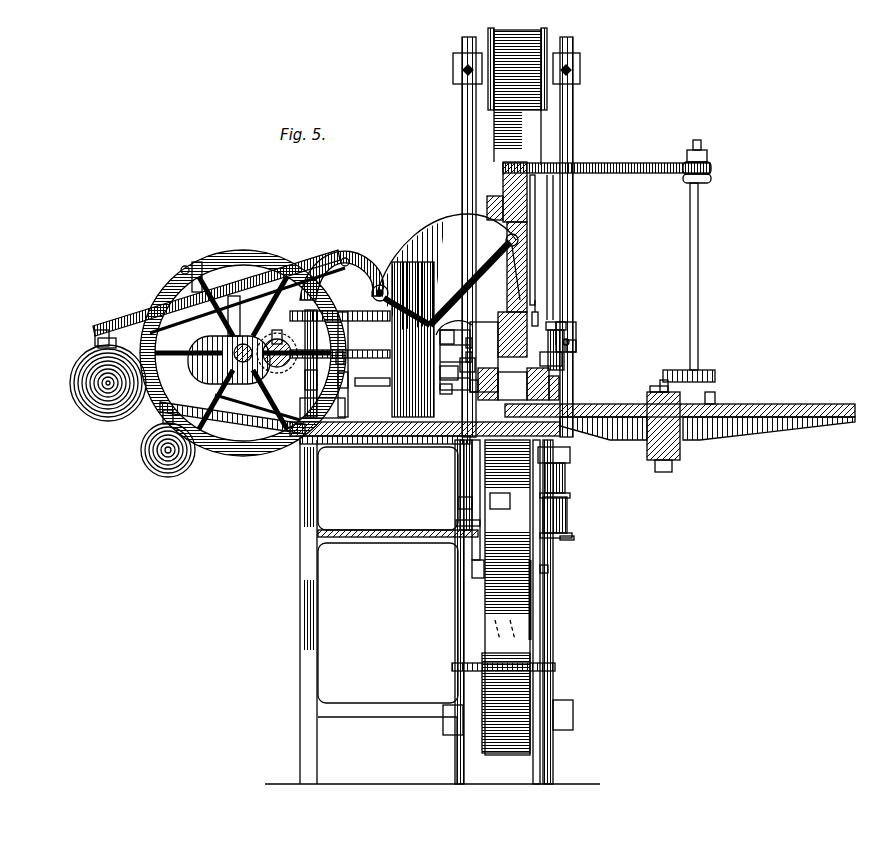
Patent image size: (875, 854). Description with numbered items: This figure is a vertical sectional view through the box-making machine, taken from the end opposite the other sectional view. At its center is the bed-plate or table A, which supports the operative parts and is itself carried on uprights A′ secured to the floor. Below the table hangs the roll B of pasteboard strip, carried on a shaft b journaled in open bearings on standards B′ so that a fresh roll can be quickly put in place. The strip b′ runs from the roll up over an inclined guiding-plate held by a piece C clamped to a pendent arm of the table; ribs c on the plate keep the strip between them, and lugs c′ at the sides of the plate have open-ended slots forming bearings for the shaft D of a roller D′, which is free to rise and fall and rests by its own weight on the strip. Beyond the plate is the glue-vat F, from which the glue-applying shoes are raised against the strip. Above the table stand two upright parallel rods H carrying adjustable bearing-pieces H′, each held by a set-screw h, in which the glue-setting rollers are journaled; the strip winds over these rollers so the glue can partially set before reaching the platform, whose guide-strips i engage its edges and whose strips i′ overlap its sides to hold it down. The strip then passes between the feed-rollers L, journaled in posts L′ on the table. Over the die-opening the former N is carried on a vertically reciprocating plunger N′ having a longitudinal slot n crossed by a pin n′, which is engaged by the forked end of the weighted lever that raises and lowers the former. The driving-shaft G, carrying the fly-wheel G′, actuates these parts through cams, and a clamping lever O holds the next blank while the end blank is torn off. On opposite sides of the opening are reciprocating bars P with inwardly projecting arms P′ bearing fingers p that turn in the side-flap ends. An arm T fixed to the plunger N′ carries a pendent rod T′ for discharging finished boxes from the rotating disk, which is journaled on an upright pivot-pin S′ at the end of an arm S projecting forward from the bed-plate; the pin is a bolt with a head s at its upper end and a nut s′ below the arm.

The upright parallel rods H is at (465, 186).
The bearing-pieces H′ is at (460, 80).
The set-screw h is at (458, 68).
The arm T is at (622, 166).
The plunger N′ is at (527, 190).
The longitudinal slot n is at (535, 220).
The pendent rod T′ is at (700, 255).
The head s is at (665, 379).
The pivot-pin S′ is at (660, 388).
The arm S is at (603, 441).
The nut s′ is at (673, 466).
The bed-plate A is at (378, 442).
The horizontally-reciprocating bars P is at (577, 368).
The posts L′ is at (559, 382).
The clamping lever O is at (413, 339).
The pin n′ is at (509, 264).
The fly-wheel G′ is at (178, 282).
The driving-shaft G is at (210, 343).
The fingers p is at (338, 357).
The guide-strips i′ is at (468, 343).
The guide-strips i is at (468, 356).
The former N is at (440, 340).
The arms P′ is at (446, 396).
The feed-rollers L is at (470, 387).
The uprights A′ is at (312, 620).
The roll B is at (500, 664).
The standards B′ is at (456, 757).
The shaft b is at (455, 665).
The strip b′ is at (533, 597).
The roller D′ is at (507, 509).
The shaft D is at (549, 520).
The glue-vat F is at (565, 486).
The piece C is at (457, 504).
The lugs c′ is at (458, 528).
The ribs c is at (545, 568).